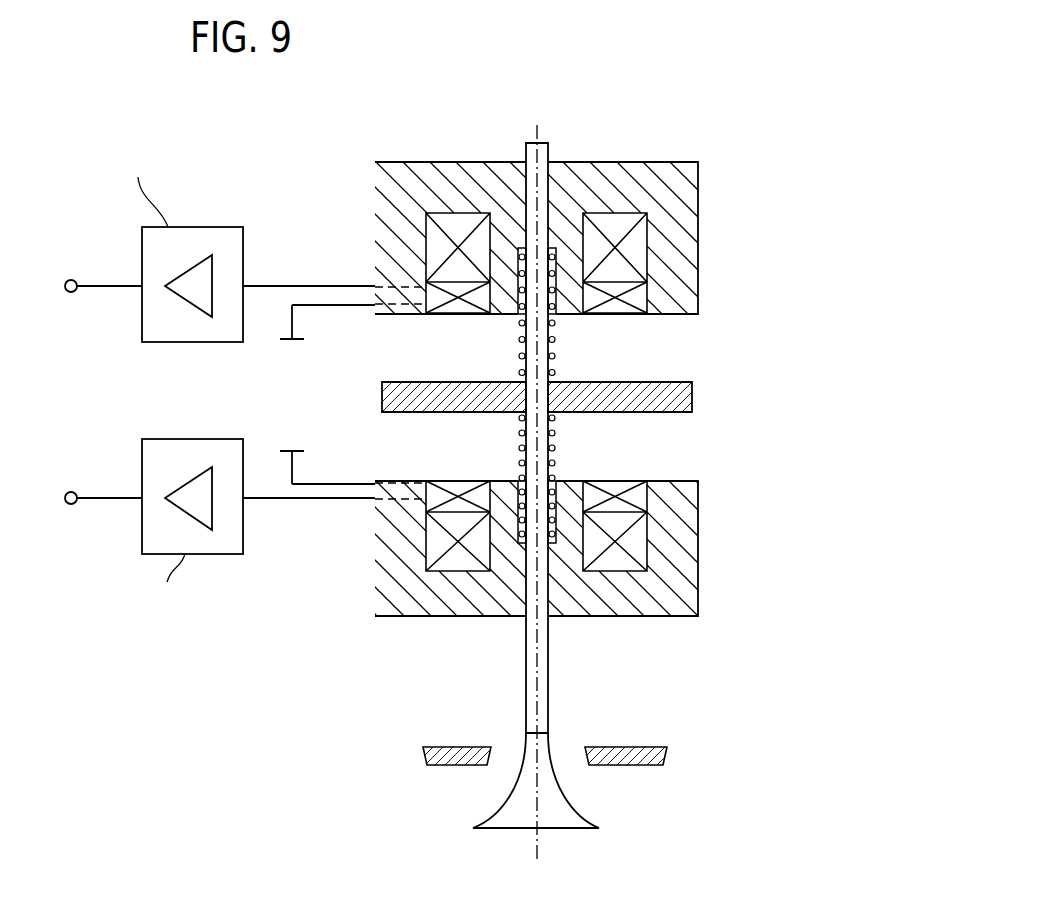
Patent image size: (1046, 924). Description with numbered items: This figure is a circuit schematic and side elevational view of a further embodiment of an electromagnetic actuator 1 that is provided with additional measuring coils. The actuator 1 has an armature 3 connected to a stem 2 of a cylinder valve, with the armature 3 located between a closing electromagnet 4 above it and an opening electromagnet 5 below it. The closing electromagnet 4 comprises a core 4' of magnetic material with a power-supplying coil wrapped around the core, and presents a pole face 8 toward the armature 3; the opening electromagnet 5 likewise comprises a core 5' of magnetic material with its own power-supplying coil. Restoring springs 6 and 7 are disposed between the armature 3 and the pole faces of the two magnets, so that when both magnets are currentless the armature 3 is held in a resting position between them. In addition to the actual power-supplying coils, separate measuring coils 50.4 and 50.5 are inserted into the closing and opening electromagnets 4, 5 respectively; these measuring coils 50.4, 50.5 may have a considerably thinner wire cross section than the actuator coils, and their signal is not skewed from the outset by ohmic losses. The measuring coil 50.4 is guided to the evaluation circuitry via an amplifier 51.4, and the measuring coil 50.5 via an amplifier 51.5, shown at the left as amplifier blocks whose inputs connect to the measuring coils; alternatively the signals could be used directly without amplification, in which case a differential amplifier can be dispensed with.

The electromagnetic actuator 1 is at (838, 405).
The stem 2 is at (539, 670).
The armature 3 is at (692, 405).
The closing electromagnet 4 is at (545, 238).
The core 4' is at (545, 238).
The opening electromagnet 5 is at (539, 551).
The core 5' is at (537, 548).
The restoring spring 6 is at (551, 328).
The restoring spring 7 is at (551, 445).
The pole face 8 is at (402, 314).
The measuring coil 50.4 is at (658, 307).
The measuring coil 50.5 is at (615, 485).
The amplifier 51.4 is at (232, 240).
The amplifier 51.5 is at (230, 450).